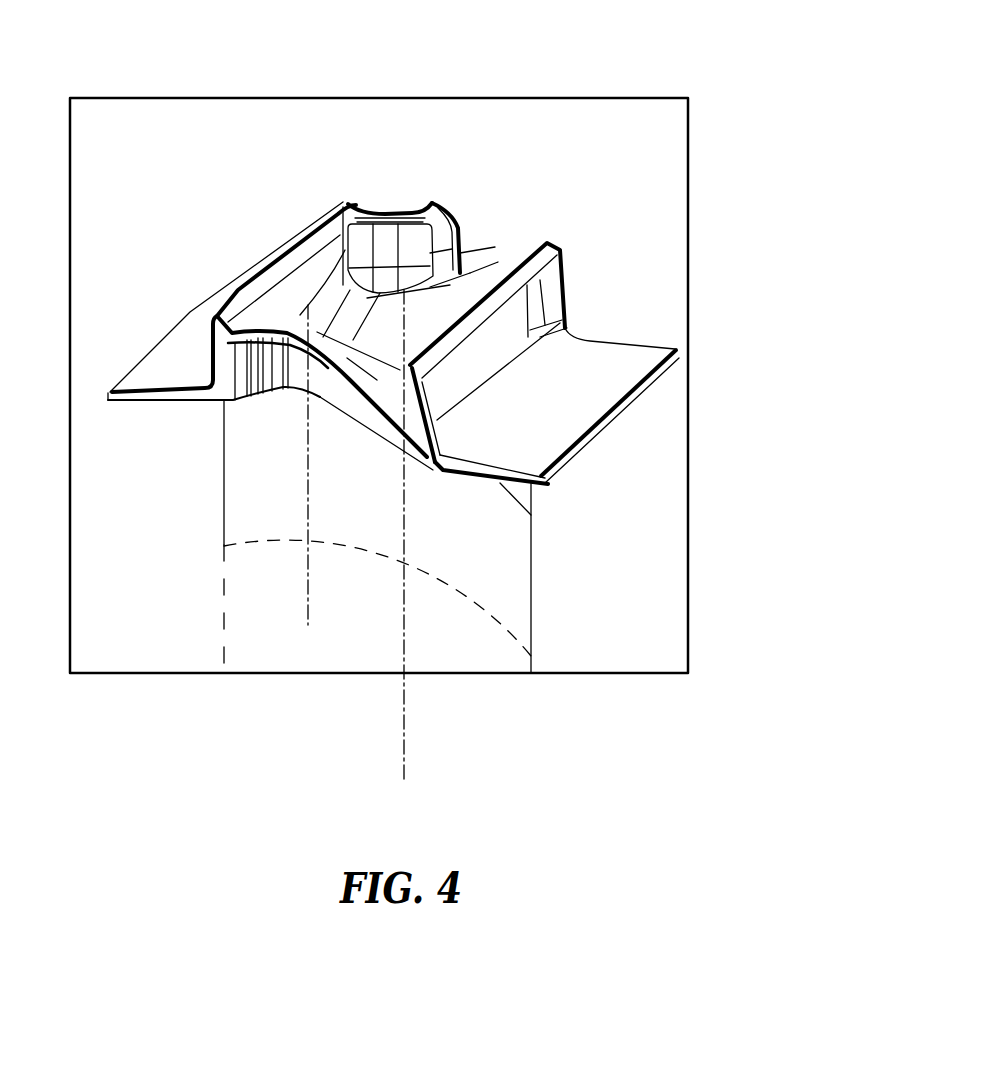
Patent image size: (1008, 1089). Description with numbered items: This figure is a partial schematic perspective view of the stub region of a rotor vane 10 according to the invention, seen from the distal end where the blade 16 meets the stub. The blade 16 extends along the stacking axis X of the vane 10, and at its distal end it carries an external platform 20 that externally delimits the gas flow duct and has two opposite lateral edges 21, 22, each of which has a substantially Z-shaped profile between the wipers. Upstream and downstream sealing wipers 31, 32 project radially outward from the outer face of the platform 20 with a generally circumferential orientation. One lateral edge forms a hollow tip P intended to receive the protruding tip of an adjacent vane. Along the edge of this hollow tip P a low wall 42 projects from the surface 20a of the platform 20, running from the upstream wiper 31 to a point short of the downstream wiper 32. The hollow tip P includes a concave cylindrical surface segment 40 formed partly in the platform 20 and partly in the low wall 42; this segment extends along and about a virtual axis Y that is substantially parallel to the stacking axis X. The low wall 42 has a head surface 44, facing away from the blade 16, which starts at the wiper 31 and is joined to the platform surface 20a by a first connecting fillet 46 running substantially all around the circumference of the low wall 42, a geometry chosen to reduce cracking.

The vane 10 is at (463, 385).
The blade 16 is at (566, 578).
The platform 20 is at (609, 403).
The surface of the external platform 20a is at (540, 136).
The lateral edge 21 is at (452, 163).
The lateral edge 22 is at (232, 362).
The upstream sealing wiper 31 is at (306, 298).
The downstream sealing wiper 32 is at (542, 238).
The concave cylindrical surface segment 40 is at (406, 152).
The low wall 42 is at (368, 155).
The head surface 44 is at (384, 181).
The first connecting fillet 46 is at (358, 424).
The hollow tip P is at (206, 542).
The stacking axis X is at (469, 535).
The virtual axis Y is at (358, 542).